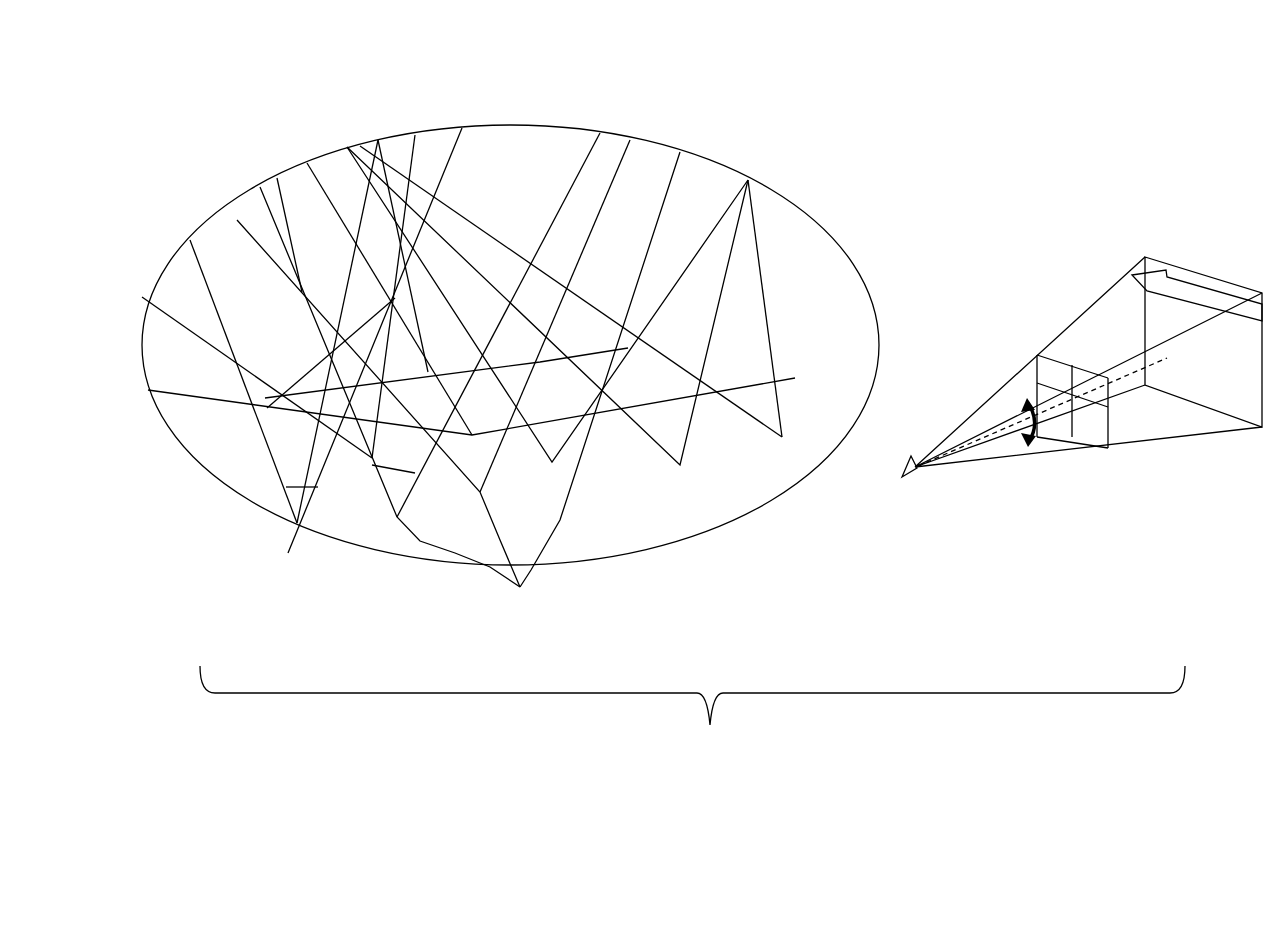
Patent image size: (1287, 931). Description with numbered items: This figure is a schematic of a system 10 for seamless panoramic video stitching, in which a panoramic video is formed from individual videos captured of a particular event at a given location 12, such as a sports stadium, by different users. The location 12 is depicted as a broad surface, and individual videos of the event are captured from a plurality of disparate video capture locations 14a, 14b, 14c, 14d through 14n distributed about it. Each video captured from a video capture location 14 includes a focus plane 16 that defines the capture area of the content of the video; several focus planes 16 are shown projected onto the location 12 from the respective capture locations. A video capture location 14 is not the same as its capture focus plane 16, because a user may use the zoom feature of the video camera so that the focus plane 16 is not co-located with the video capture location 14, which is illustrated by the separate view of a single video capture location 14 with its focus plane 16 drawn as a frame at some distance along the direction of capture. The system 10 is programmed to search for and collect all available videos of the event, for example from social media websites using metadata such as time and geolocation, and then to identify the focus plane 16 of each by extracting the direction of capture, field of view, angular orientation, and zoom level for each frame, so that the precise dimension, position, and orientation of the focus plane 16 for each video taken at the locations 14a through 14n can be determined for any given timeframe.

The system 10 is at (745, 92).
The location 12 is at (787, 201).
The video capture location 14 is at (915, 470).
The video capture location 14a is at (326, 355).
The video capture location 14b is at (371, 375).
The video capture location 14c is at (471, 363).
The video capture location 14d is at (547, 367).
The video capture location 14n is at (782, 437).
The focus plane 16 is at (353, 327).